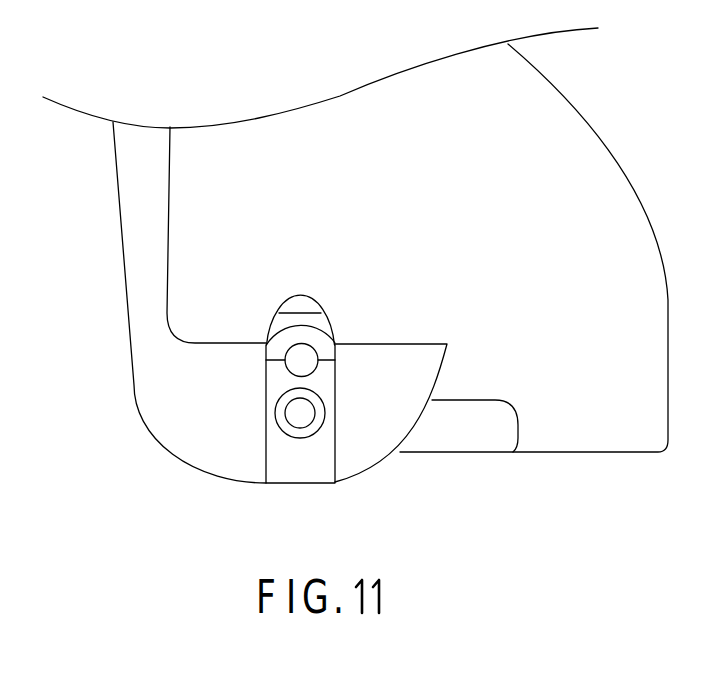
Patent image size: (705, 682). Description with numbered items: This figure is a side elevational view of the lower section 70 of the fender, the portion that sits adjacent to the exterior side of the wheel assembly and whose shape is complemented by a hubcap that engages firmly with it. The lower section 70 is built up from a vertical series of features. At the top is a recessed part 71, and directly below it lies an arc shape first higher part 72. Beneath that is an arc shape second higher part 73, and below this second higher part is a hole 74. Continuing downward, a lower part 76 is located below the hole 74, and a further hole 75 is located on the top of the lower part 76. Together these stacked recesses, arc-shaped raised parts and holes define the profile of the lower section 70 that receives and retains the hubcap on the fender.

The lower section 70 is at (367, 381).
The recessed part 71 is at (302, 302).
The arc shape first higher part 72 is at (313, 320).
The arc shape second higher part 73 is at (315, 338).
The hole 74 is at (305, 358).
The hole 75 is at (298, 433).
The lower part 76 is at (315, 460).